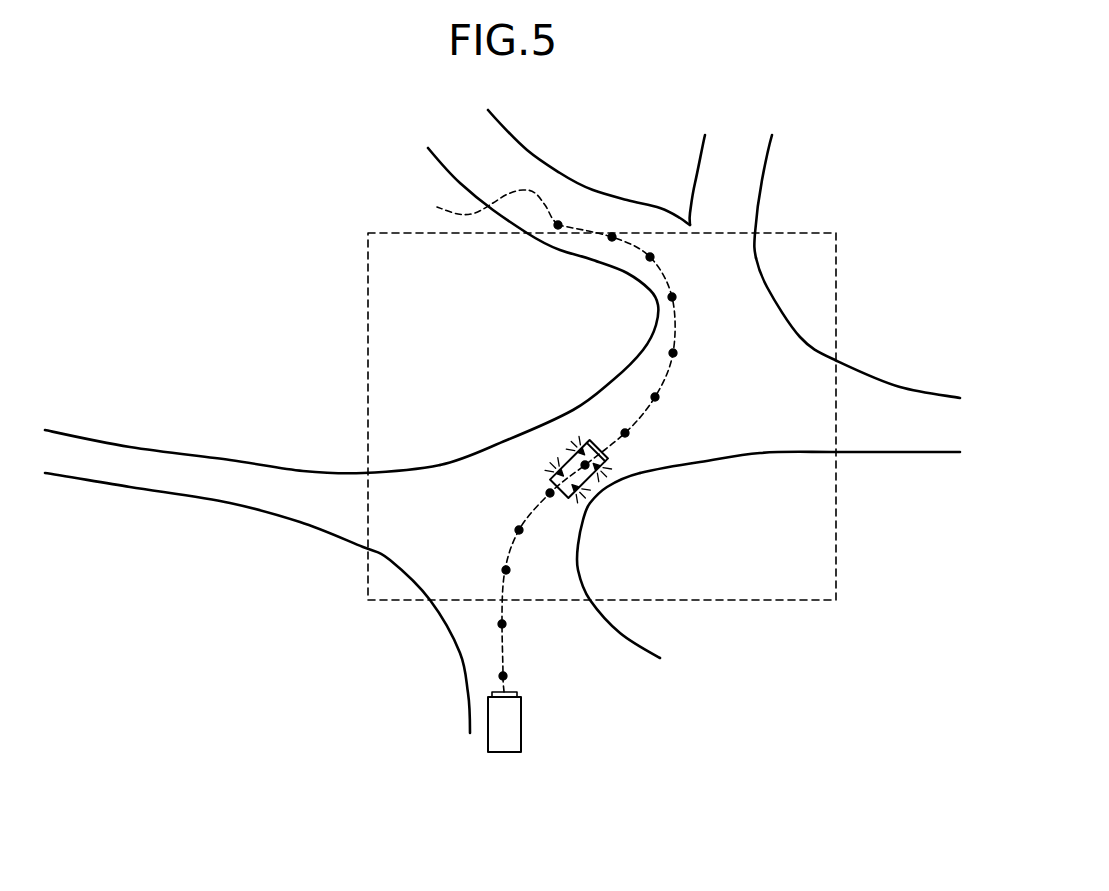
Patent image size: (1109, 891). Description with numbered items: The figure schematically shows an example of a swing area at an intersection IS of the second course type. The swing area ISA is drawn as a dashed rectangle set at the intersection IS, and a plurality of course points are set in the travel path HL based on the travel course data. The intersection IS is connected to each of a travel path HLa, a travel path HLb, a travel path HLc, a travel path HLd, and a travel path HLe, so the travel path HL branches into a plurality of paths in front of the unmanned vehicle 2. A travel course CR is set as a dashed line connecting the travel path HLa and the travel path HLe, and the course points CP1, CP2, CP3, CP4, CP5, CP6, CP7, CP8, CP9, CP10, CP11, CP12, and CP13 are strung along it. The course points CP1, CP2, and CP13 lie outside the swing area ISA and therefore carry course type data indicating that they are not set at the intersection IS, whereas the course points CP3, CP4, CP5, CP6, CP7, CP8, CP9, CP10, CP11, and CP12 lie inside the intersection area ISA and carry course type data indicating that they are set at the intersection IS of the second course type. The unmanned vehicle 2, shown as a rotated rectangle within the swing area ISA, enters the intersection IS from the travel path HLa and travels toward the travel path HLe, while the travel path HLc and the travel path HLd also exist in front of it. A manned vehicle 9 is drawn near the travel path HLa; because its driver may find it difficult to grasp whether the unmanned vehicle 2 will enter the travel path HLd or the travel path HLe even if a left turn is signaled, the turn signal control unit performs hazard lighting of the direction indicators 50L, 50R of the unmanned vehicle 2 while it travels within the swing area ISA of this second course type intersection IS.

The unmanned vehicle 2 is at (549, 478).
The manned vehicle 9 is at (520, 726).
The direction indicator 50L is at (586, 444).
The direction indicator 50R is at (567, 505).
The course point CP1 is at (507, 676).
The course point CP2 is at (505, 624).
The course point CP3 is at (508, 570).
The course point CP4 is at (518, 530).
The course point CP5 is at (549, 493).
The course point CP6 is at (612, 456).
The course point CP7 is at (628, 433).
The course point CP8 is at (658, 397).
The course point CP9 is at (676, 353).
The course point CP10 is at (675, 299).
The course point CP11 is at (653, 257).
The course point CP12 is at (612, 239).
The course point CP13 is at (558, 223).
The travel course CR is at (538, 441).
The travel path HL is at (233, 456).
The travel path HLa is at (487, 681).
The travel path HLb is at (299, 483).
The travel path HLc is at (918, 396).
The travel path HLd is at (755, 170).
The travel path HLe is at (640, 204).
The intersection IS is at (636, 323).
The swing area ISA is at (836, 553).